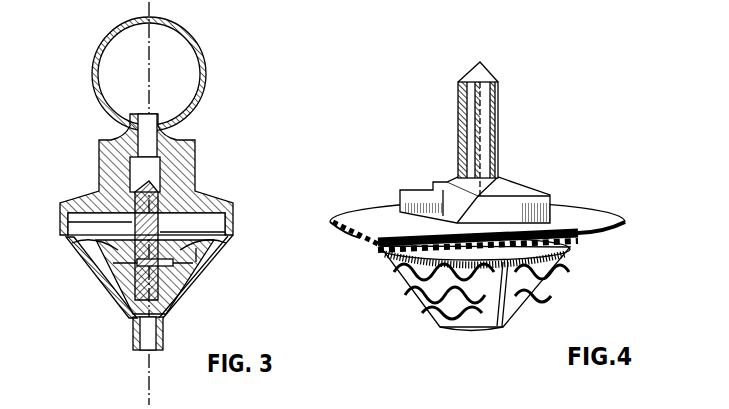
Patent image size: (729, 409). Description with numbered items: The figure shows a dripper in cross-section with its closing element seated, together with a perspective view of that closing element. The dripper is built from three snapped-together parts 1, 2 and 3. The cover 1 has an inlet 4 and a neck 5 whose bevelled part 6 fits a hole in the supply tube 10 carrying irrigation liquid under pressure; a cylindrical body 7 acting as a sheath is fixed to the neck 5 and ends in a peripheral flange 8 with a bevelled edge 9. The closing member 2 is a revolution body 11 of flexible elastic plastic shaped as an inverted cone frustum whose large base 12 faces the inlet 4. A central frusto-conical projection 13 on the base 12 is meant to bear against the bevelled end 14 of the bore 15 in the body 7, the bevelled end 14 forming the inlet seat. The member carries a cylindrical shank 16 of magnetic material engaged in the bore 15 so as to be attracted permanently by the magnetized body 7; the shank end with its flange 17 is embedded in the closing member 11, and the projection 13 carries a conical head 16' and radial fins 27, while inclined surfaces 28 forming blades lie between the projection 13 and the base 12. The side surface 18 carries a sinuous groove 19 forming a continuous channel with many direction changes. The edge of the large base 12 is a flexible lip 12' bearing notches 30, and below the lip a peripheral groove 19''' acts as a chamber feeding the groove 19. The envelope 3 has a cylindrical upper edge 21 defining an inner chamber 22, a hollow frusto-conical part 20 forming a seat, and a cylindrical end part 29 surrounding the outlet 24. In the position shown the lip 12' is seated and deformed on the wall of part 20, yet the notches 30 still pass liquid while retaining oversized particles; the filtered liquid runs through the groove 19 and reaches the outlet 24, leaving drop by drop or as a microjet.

In FIG. 3, the cover 1 is at (203, 170).
In FIG. 3, the closing member 2 is at (203, 292).
In FIG. 4, the closing member 2 is at (466, 291).
In FIG. 3, the envelope 3 is at (104, 302).
In FIG. 3, the inlet 4 is at (153, 116).
In FIG. 3, the neck 5 is at (168, 132).
In FIG. 3, the bevelled part 6 is at (168, 121).
In FIG. 3, the cylindrical body 7 is at (196, 183).
In FIG. 3, the peripheral flange 8 is at (212, 195).
In FIG. 3, the bevelled edge 9 is at (62, 224).
In FIG. 3, the supply tube 10 is at (197, 47).
In FIG. 3, the revolution body 11 is at (176, 290).
In FIG. 3, the large base 12 is at (143, 267).
In FIG. 4, the large base 12 is at (477, 187).
In FIG. 3, the lip 12' is at (81, 263).
In FIG. 4, the lip 12' is at (345, 208).
In FIG. 3, the central frusto-conical projection 13 is at (190, 226).
In FIG. 4, the central frusto-conical projection 13 is at (495, 190).
In FIG. 3, the bevelled end 14 is at (92, 200).
In FIG. 3, the bore 15 is at (133, 163).
In FIG. 3, the cylindrical shank 16 is at (108, 228).
In FIG. 4, the cylindrical shank 16 is at (505, 129).
In FIG. 3, the conical head 16' is at (194, 162).
In FIG. 4, the conical head 16' is at (498, 63).
In FIG. 3, the flange 17 is at (185, 266).
In FIG. 4, the side surface 18 is at (392, 253).
In FIG. 3, the sinuous groove 19 is at (101, 284).
In FIG. 4, the sinuous groove 19 is at (477, 304).
In FIG. 3, the peripheral groove 19''' is at (75, 275).
In FIG. 4, the peripheral groove 19''' is at (504, 248).
In FIG. 3, the hollow frusto-conical part 20 is at (130, 320).
In FIG. 3, the cylindrical upper edge 21 is at (62, 210).
In FIG. 3, the inner chamber 22 is at (60, 204).
In FIG. 3, the outlet 24 is at (148, 346).
In FIG. 3, the radial fins 27 is at (80, 240).
In FIG. 4, the radial fins 27 is at (480, 100).
In FIG. 4, the inclined surfaces 28 is at (548, 210).
In FIG. 3, the cylindrical end part 29 is at (164, 331).
In FIG. 4, the notches 30 is at (333, 219).